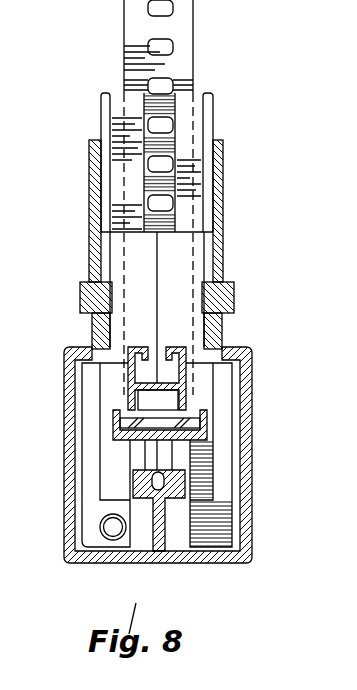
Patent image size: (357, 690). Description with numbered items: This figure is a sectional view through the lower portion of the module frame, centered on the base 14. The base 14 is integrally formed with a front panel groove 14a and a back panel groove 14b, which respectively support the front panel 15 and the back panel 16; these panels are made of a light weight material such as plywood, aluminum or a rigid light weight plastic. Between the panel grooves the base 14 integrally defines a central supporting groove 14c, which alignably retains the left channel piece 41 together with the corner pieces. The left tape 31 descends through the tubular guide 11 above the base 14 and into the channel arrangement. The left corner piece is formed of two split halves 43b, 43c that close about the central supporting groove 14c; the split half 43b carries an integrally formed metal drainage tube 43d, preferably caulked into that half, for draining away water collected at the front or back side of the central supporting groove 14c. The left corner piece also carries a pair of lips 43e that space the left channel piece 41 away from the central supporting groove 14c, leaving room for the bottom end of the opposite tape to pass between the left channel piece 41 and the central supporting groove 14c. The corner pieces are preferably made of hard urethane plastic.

The left tape 31 is at (187, 28).
The tube 11 is at (213, 106).
The front panel 15 is at (88, 176).
The back panel 16 is at (222, 185).
The front panel groove 14a is at (80, 292).
The back panel groove 14b is at (233, 291).
The base 14 is at (254, 389).
The left channel piece 41 is at (133, 385).
The lips 43e is at (128, 443).
The split half 43c is at (172, 462).
The split half 43b is at (145, 460).
The drainage tube 43d is at (97, 538).
The central supporting groove 14c is at (163, 517).